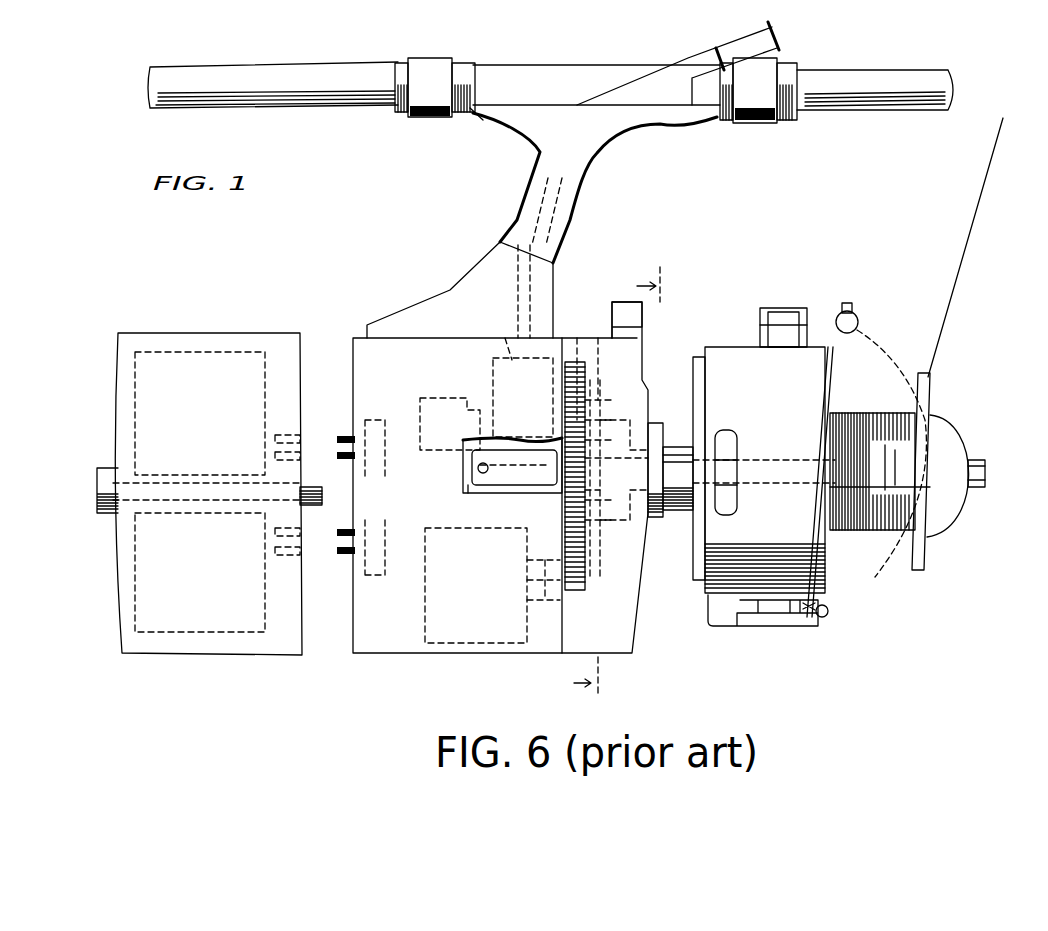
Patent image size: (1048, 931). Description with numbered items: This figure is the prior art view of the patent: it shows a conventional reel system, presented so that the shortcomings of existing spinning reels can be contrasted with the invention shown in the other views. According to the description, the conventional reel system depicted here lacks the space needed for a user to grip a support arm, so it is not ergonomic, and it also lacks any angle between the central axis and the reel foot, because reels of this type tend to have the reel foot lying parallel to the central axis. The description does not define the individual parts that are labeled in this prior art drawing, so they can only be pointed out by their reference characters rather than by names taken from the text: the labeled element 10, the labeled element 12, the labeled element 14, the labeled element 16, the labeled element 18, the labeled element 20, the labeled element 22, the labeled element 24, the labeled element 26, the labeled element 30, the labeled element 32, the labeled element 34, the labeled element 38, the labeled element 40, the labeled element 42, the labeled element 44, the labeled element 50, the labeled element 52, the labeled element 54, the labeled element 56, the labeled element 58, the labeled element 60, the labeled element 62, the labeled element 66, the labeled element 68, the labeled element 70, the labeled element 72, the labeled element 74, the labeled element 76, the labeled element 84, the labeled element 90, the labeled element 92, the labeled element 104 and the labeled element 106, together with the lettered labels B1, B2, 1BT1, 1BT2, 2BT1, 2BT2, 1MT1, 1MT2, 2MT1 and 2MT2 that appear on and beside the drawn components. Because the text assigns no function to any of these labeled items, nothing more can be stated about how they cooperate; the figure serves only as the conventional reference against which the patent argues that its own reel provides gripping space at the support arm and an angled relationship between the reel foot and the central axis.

The motor 10 is at (809, 466).
The housing 12 is at (407, 293).
The controller box 14 is at (398, 655).
The battery box 16 is at (218, 477).
The battery shaft 18 is at (100, 466).
The tube 20 is at (597, 191).
The pipe 22 is at (892, 80).
The coupling 24 is at (447, 60).
The junction 26 is at (467, 122).
The pulley 30 is at (930, 471).
The shaft 32 is at (988, 470).
The motor cap 34 is at (718, 345).
The strap 38 is at (840, 618).
The bracket 40 is at (790, 627).
The cable 42 is at (962, 266).
The flange 44 is at (930, 418).
The control circuit 50 is at (507, 645).
The switch 52 is at (553, 580).
The gear rack 54 is at (588, 600).
The coupling 56 is at (624, 512).
The coupling plate 58 is at (660, 425).
The coupling hub 60 is at (673, 513).
The cable 62 is at (577, 338).
The cable 66 is at (598, 340).
The connector boss 68 is at (645, 316).
The arm 70 is at (487, 462).
The arm member 72 is at (512, 496).
The arm pivot 74 is at (480, 495).
The slot 76 is at (737, 434).
The gear shaft 84 is at (602, 542).
The cable 90 is at (502, 336).
The filler tube 92 is at (776, 34).
The control module 104 is at (496, 370).
The control module 106 is at (440, 410).
The battery 1 B1 is at (200, 413).
The battery 2 B2 is at (200, 572).
The battery terminal 1 1BT1 is at (300, 437).
The battery terminal 2 1BT2 is at (275, 456).
The battery terminal 3 2BT1 is at (275, 532).
The battery terminal 4 2BT2 is at (302, 555).
The motor terminal 1 1MT1 is at (352, 437).
The motor terminal 2 1MT2 is at (355, 457).
The motor terminal 3 2MT1 is at (355, 531).
The motor terminal 4 2MT2 is at (350, 553).